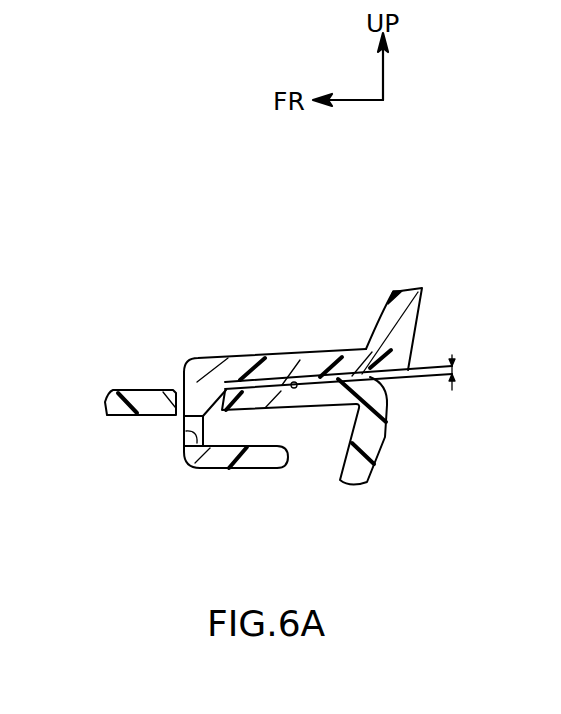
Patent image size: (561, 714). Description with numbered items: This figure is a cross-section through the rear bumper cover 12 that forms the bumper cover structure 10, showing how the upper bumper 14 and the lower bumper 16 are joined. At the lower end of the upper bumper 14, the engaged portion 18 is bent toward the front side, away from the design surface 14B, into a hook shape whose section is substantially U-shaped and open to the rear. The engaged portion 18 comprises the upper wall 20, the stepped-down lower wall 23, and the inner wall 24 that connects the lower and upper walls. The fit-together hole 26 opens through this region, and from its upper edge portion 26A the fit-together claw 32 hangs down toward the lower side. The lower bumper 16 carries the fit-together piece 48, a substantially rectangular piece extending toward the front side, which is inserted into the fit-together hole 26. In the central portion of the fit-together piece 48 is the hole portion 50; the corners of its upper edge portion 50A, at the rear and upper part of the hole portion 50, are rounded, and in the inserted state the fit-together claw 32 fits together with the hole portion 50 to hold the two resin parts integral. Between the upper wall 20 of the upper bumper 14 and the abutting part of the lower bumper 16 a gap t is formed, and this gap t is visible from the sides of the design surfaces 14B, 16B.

The bumper cover structure 10 is at (287, 353).
The rear bumper cover 12 is at (347, 224).
The upper bumper 14 is at (428, 293).
The design surface 14B is at (414, 322).
The lower bumper 16 is at (383, 466).
The design surface 16B is at (386, 434).
The engaged portion 18 is at (199, 479).
The upper wall 20 is at (336, 351).
The lower wall 23 is at (275, 452).
The inner wall 24 is at (190, 423).
The fit-together hole 26 is at (186, 431).
The upper edge portion 26A is at (294, 381).
The fit-together claw 32 is at (183, 376).
The fit-together piece 48 is at (310, 405).
The hole portion 50 is at (254, 345).
The upper edge portion 50A is at (218, 390).
The gap t is at (456, 372).